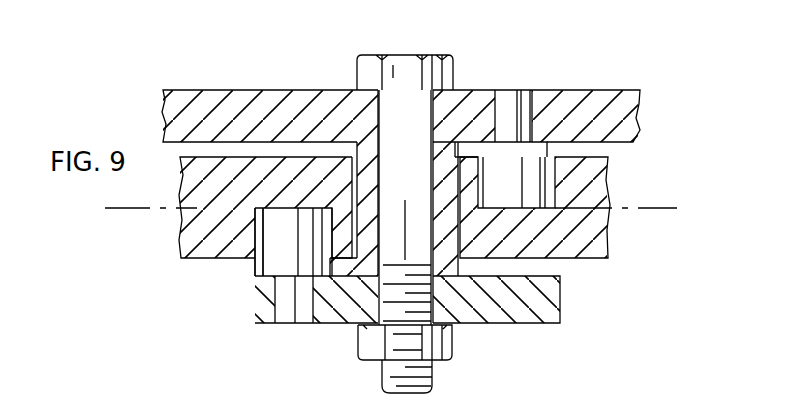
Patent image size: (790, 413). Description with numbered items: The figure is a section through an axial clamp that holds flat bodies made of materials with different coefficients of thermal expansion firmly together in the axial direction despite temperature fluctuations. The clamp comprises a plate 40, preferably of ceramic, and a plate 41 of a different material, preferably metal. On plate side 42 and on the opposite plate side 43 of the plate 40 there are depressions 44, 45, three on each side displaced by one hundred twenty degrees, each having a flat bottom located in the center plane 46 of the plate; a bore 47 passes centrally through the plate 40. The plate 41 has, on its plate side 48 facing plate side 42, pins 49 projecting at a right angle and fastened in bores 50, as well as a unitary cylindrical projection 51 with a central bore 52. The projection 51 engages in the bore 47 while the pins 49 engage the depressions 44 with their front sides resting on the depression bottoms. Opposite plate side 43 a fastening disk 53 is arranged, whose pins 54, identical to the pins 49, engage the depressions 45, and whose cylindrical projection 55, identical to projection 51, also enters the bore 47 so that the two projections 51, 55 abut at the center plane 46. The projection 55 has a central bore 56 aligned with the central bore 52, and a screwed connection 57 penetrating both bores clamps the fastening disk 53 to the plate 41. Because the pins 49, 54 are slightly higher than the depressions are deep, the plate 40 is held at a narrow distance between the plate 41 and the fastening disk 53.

The plate 40 is at (580, 237).
The plate 41 is at (602, 98).
The plate side 42 is at (597, 153).
The plate side 43 is at (560, 262).
The depression 44 is at (485, 150).
The depression 45 is at (250, 242).
The center plane 46 is at (665, 210).
The bore 47 is at (350, 272).
The plate side 48 is at (627, 153).
The pin 49 is at (530, 182).
The bore 50 is at (535, 98).
The cylindrical projection 51 is at (350, 157).
The central bore 52 is at (350, 90).
The fastening disk 53 is at (550, 323).
The pin 54 is at (280, 258).
The cylindrical projection 55 is at (485, 258).
The central bore 56 is at (467, 245).
The screwed connection 57 is at (385, 377).